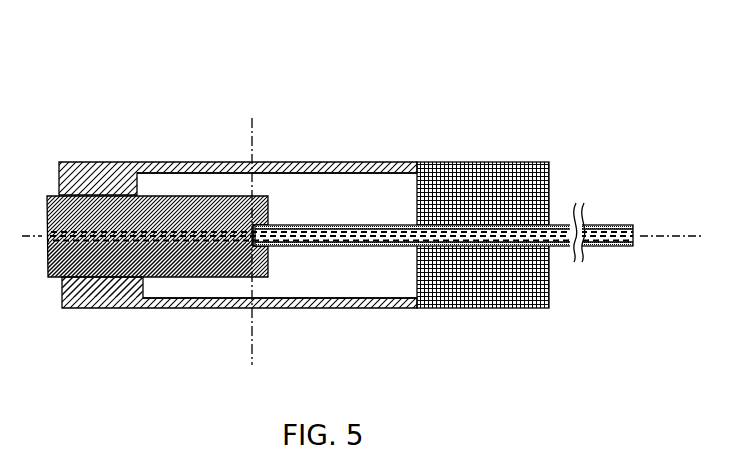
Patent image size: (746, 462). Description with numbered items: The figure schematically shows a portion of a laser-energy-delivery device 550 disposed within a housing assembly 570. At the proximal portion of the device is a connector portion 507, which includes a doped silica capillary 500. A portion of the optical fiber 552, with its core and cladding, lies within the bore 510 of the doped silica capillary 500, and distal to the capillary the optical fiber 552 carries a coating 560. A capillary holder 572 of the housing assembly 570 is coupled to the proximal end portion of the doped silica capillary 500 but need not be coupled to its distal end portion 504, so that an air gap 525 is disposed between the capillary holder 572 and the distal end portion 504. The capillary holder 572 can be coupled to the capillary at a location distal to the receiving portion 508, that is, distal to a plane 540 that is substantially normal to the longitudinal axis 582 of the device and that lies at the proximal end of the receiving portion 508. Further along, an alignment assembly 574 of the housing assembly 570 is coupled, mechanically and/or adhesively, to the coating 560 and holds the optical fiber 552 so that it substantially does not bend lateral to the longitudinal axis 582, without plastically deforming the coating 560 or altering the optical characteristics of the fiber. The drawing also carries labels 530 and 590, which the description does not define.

The doped silica capillary 500 is at (185, 244).
The distal end portion 504 is at (220, 287).
The connector portion 507 is at (55, 292).
The receiving portion 508 is at (268, 257).
The bore 510 is at (175, 247).
The air gap 525 is at (339, 282).
The reference plane 530 is at (258, 182).
The plane 540 is at (258, 333).
The laser-energy-delivery device 550 is at (411, 261).
The optical fiber 552 is at (116, 228).
The coating 560 is at (300, 223).
The housing assembly 570 is at (222, 209).
The capillary holder 572 is at (174, 162).
The alignment assembly 574 is at (466, 167).
The longitudinal axis 582 is at (656, 238).
The cable 590 is at (622, 207).